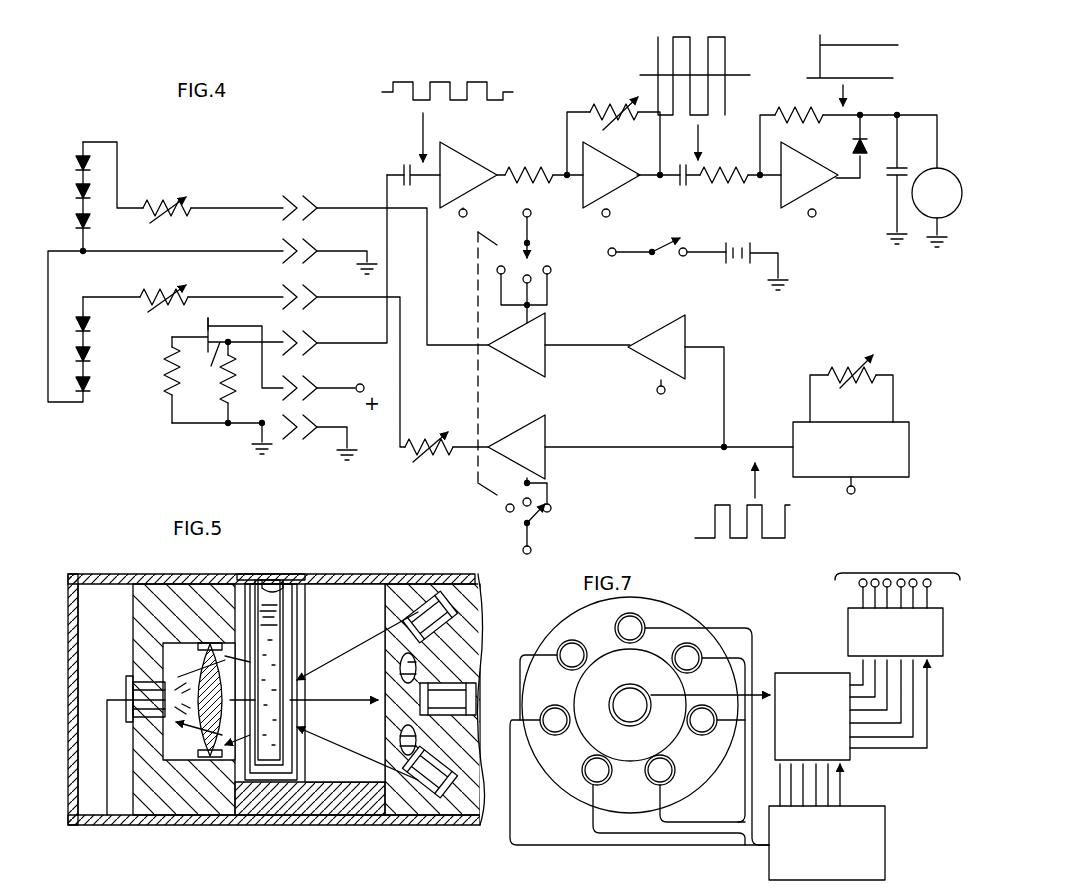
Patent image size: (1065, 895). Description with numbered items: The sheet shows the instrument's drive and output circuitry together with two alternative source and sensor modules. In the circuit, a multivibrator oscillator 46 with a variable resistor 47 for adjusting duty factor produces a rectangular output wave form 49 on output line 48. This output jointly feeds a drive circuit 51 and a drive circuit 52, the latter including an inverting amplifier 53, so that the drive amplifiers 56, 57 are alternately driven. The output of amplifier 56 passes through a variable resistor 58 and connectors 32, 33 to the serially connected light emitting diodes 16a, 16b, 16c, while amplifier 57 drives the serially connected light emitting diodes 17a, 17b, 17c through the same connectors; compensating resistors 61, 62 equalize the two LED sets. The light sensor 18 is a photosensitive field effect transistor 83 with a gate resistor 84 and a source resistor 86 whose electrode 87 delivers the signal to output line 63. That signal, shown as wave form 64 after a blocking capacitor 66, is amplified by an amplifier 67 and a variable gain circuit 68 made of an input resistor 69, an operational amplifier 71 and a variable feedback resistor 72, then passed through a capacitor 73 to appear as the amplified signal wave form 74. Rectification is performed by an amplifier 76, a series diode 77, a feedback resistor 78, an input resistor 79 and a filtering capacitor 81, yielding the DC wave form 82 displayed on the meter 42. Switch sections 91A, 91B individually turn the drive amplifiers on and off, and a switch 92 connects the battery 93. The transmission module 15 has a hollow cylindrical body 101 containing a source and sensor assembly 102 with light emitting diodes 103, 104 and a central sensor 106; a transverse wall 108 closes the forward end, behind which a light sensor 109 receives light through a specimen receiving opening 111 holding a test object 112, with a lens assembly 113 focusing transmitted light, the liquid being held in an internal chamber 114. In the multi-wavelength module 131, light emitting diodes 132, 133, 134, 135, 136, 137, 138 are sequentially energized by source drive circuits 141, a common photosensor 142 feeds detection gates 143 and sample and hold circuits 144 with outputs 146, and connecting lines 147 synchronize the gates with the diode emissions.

In FIG. 5, the module 15 is at (365, 577).
In FIG. 4, the light emitting diode 16a is at (88, 322).
In FIG. 4, the light emitting diode 16b is at (88, 352).
In FIG. 4, the light emitting diode 16c is at (88, 382).
In FIG. 4, the light emitting diode 17a is at (76, 162).
In FIG. 4, the light emitting diode 17b is at (76, 190).
In FIG. 4, the light emitting diode 17c is at (76, 220).
In FIG. 4, the light sensor 18 is at (203, 330).
In FIG. 4, the connector 32 is at (283, 206).
In FIG. 4, the connector 33 is at (319, 206).
In FIG. 4, the meter 42 is at (945, 172).
In FIG. 4, the multivibrator oscillator 46 is at (896, 478).
In FIG. 4, the variable resistor 47 is at (843, 372).
In FIG. 4, the output line 48 is at (756, 445).
In FIG. 4, the output wave form 49 is at (790, 518).
In FIG. 4, the drive circuit 51 is at (602, 456).
In FIG. 4, the drive circuit 52 is at (700, 330).
In FIG. 4, the inverting amplifier 53 is at (652, 332).
In FIG. 4, the drive amplifier 56 is at (549, 435).
In FIG. 4, the drive amplifier 57 is at (548, 332).
In FIG. 4, the variable resistor 58 is at (432, 462).
In FIG. 4, the compensating resistor 61 is at (160, 292).
In FIG. 4, the compensating resistor 62 is at (165, 203).
In FIG. 4, the output line 63 is at (385, 183).
In FIG. 4, the wave form 64 is at (482, 70).
In FIG. 4, the blocking capacitor 66 is at (404, 170).
In FIG. 4, the amplifier 67 is at (466, 164).
In FIG. 4, the variable gain circuit 68 is at (562, 108).
In FIG. 4, the input resistor 69 is at (520, 182).
In FIG. 4, the operational amplifier 71 is at (612, 154).
In FIG. 4, the variable feedback resistor 72 is at (626, 122).
In FIG. 4, the capacitor 73 is at (680, 188).
In FIG. 4, the amplified signal wave form 74 is at (732, 62).
In FIG. 4, the amplifier 76 is at (800, 166).
In FIG. 4, the diode 77 is at (868, 152).
In FIG. 4, the feedback resistor 78 is at (794, 112).
In FIG. 4, the input resistor 79 is at (722, 182).
In FIG. 4, the filtering capacitor 81 is at (902, 167).
In FIG. 4, the wave form 82 is at (850, 40).
In FIG. 4, the photosensitive field effect transistor 83 is at (212, 320).
In FIG. 4, the gate resistor 84 is at (165, 410).
In FIG. 4, the source resistor 86 is at (238, 392).
In FIG. 4, the electrode 87 is at (185, 380).
In FIG. 4, the switch section 91A is at (530, 246).
In FIG. 4, the switch section 91B is at (535, 528).
In FIG. 4, the switch 92 is at (662, 250).
In FIG. 4, the battery 93 is at (724, 262).
In FIG. 5, the hollow cylindrical body 101 is at (302, 826).
In FIG. 5, the source and sensor assembly 102 is at (466, 806).
In FIG. 5, the light emitting diode 103 is at (432, 602).
In FIG. 5, the light emitting diode 104 is at (452, 794).
In FIG. 5, the sensor 106 is at (445, 703).
In FIG. 5, the transverse wall 108 is at (68, 812).
In FIG. 5, the light sensor 109 is at (142, 688).
In FIG. 5, the specimen receiving opening 111 is at (243, 592).
In FIG. 5, the test object 112 is at (304, 577).
In FIG. 5, the lens assembly 113 is at (205, 758).
In FIG. 5, the internal chamber 114 is at (274, 586).
In FIG. 7, the module 131 is at (680, 604).
In FIG. 7, the light emitting diode 132 is at (622, 626).
In FIG. 7, the light emitting diode 133 is at (680, 662).
In FIG. 7, the light emitting diode 134 is at (690, 712).
In FIG. 7, the light emitting diode 135 is at (672, 775).
In FIG. 7, the light emitting diode 136 is at (600, 784).
In FIG. 7, the light emitting diode 137 is at (554, 710).
In FIG. 7, the light emitting diode 138 is at (566, 644).
In FIG. 7, the source drive circuits 141 is at (885, 832).
In FIG. 7, the photosensor 142 is at (620, 722).
In FIG. 7, the detection gates 143 is at (804, 684).
In FIG. 7, the sample and hold circuits 144 is at (848, 626).
In FIG. 7, the outputs 146 is at (898, 572).
In FIG. 7, the connecting lines 147 is at (860, 780).